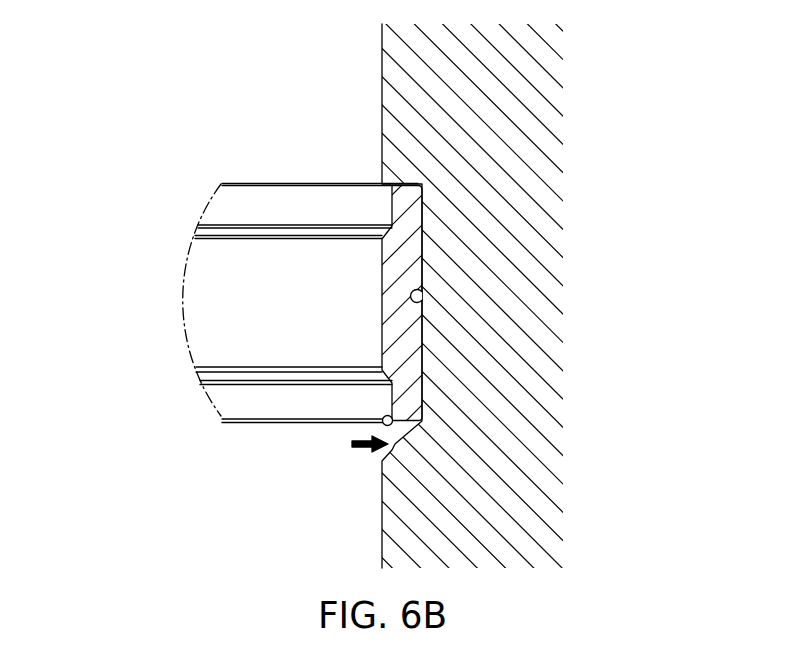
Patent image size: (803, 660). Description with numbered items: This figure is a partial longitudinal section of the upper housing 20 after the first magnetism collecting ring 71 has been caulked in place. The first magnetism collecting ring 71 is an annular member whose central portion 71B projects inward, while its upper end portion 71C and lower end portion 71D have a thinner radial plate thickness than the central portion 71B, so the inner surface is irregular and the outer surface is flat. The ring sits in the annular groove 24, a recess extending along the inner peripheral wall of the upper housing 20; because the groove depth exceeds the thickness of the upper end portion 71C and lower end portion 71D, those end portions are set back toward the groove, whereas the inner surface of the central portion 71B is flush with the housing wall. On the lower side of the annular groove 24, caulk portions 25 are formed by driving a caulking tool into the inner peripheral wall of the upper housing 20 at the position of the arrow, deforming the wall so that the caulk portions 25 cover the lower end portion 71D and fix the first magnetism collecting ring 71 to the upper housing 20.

The upper housing 20 is at (503, 105).
The annular groove 24 is at (422, 293).
The caulk portion 25 is at (381, 425).
The first magnetism collecting ring 71 is at (401, 330).
The central portion 71B is at (227, 305).
The upper end portion 71C is at (297, 208).
The lower end portion 71D is at (235, 400).